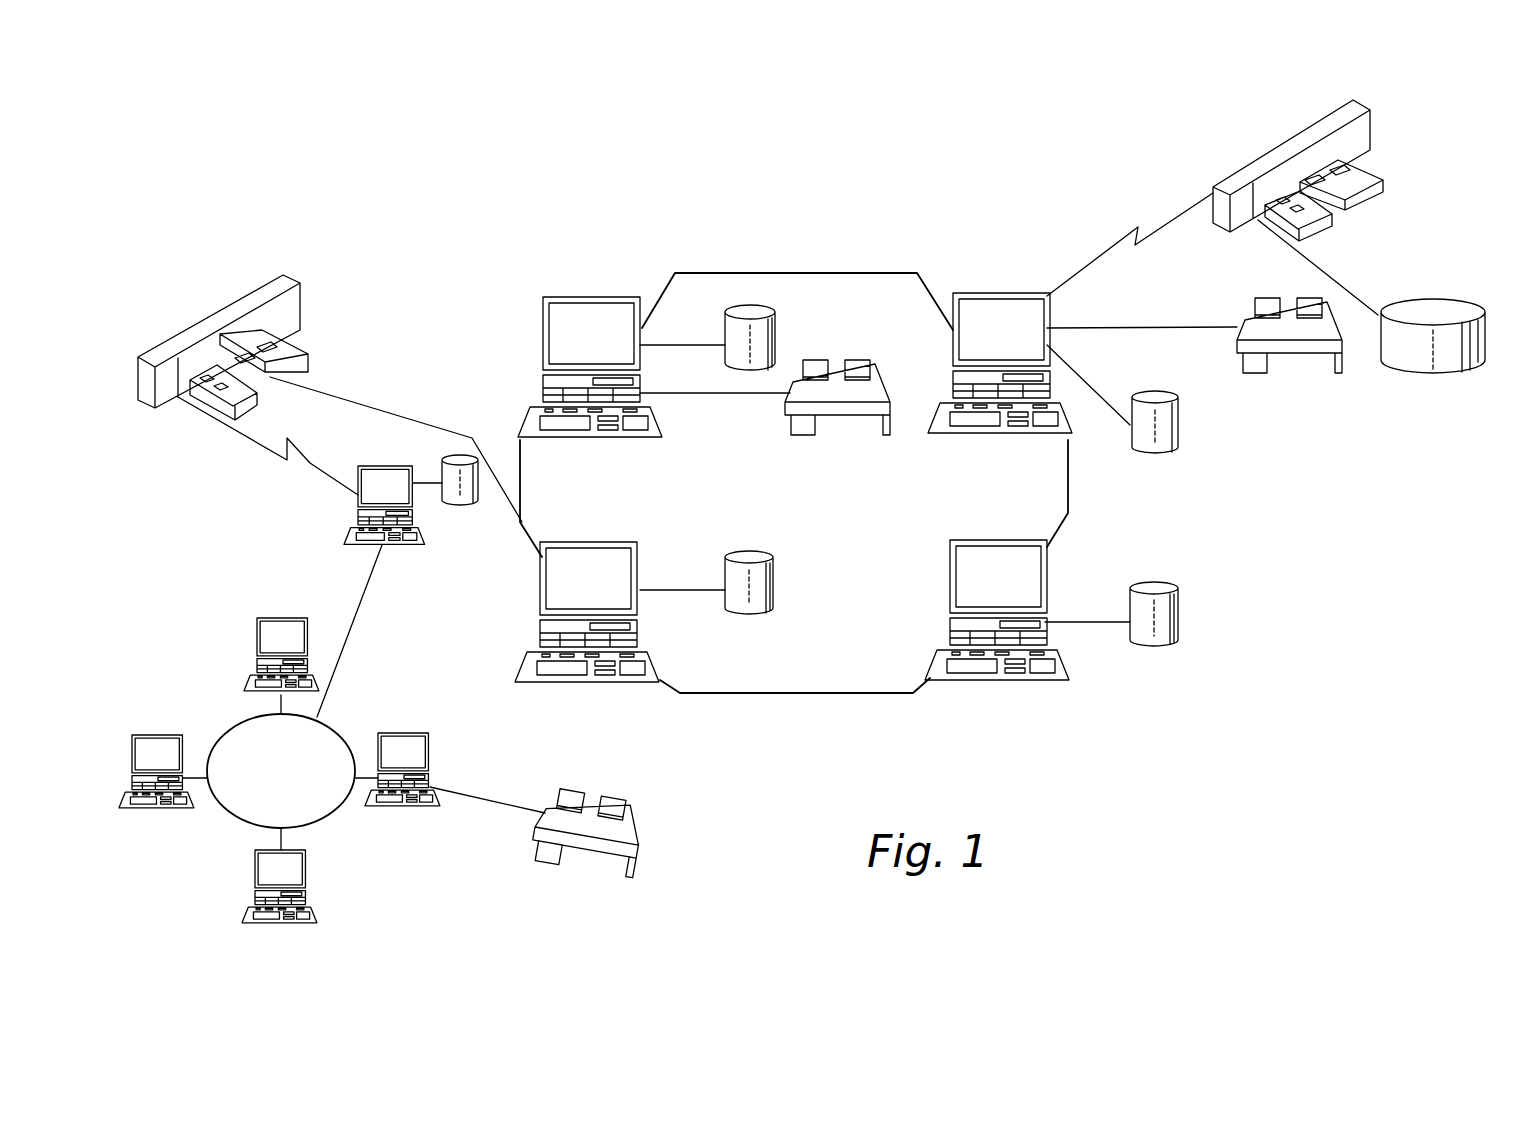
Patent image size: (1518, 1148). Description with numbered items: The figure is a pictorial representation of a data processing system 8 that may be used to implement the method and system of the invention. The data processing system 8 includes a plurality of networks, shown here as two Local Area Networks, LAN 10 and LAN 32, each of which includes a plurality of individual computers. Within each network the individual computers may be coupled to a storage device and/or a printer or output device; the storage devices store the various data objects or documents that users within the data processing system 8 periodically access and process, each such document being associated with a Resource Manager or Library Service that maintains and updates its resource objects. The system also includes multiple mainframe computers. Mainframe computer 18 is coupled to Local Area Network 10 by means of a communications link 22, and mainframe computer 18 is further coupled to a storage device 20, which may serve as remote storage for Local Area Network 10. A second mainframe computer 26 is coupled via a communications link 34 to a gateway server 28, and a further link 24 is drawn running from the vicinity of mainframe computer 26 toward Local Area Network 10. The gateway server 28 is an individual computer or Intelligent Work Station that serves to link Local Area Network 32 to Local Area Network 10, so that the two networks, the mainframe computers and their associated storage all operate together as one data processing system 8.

The data processing system 8 is at (830, 233).
The Local Area Network (LAN) 10 is at (822, 693).
The mainframe computer 18 is at (1290, 133).
The storage device 20 is at (1453, 300).
The communications link 22 is at (1172, 222).
The communication link 24 is at (392, 408).
The mainframe computer 26 is at (292, 283).
The gateway server 28 is at (385, 467).
The Local Area Network (LAN) 32 is at (233, 818).
The communications link 34 is at (307, 470).